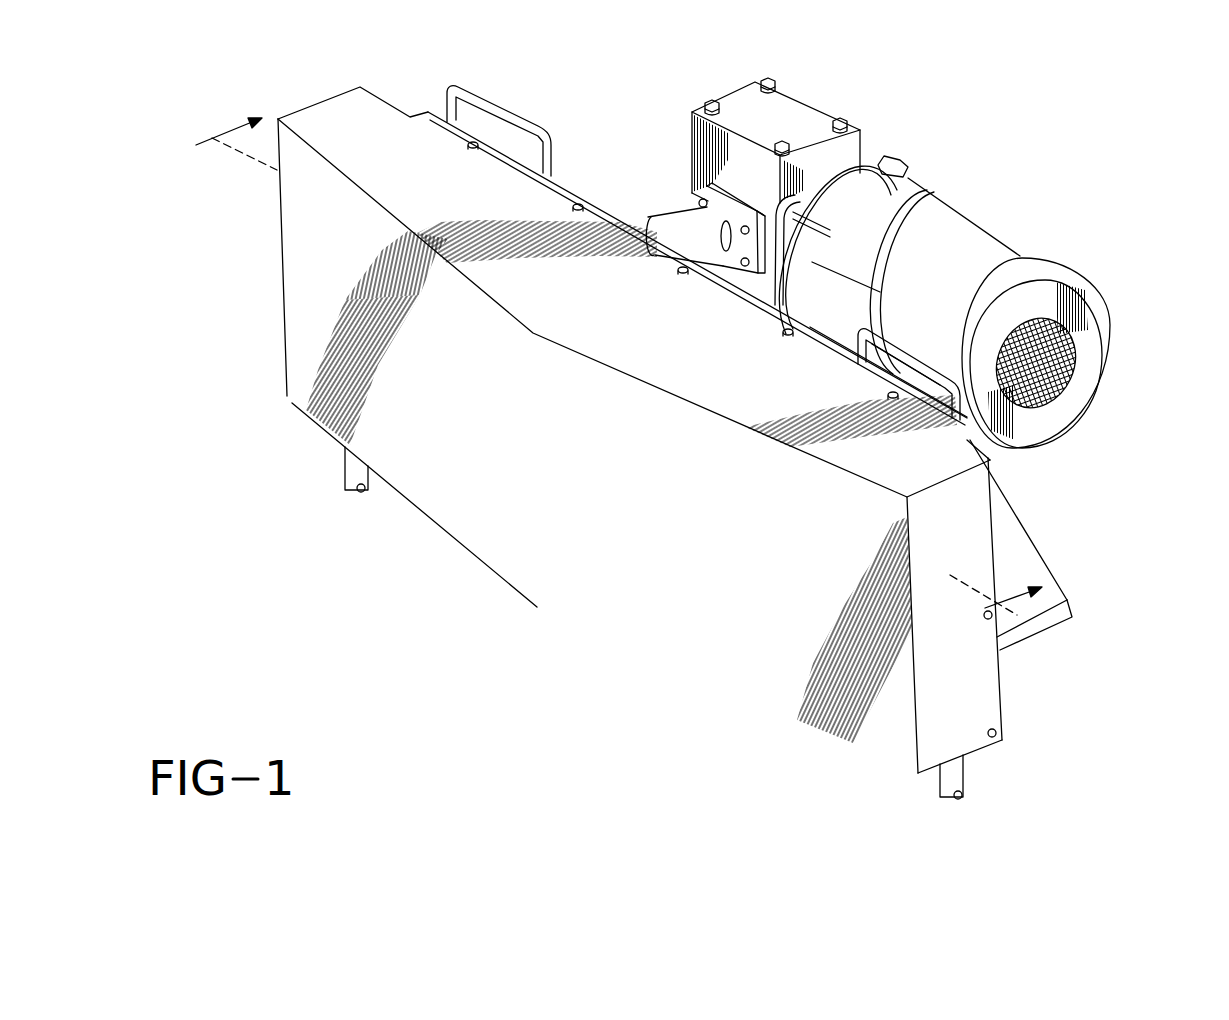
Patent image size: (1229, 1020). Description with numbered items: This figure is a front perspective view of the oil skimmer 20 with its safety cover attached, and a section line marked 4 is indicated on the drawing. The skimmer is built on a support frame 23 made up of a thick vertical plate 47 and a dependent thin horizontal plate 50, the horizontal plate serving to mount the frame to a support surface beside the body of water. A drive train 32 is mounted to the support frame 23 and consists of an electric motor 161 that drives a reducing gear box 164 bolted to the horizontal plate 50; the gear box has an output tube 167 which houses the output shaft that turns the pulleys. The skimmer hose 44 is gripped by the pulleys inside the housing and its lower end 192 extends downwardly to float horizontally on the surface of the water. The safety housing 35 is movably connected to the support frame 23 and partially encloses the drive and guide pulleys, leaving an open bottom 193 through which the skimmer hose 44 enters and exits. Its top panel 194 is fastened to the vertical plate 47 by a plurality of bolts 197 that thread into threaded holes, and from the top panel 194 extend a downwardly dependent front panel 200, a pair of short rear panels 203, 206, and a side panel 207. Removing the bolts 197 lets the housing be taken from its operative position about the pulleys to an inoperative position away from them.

The section line 4- 4 is at (630, 351).
The oil skimmer 20 is at (1127, 127).
The support frame 23 is at (1057, 525).
The drive train 32 is at (988, 138).
The safety housing 35 is at (377, 82).
The skimmer hose 44 is at (975, 783).
The vertical plate 47 is at (566, 177).
The horizontal plate 50 is at (1067, 595).
The electric motor 161 is at (1020, 233).
The reducing gear box 164 is at (825, 110).
The output tube 167 is at (675, 212).
The lower end 192 is at (348, 480).
The open bottom 193 is at (590, 649).
The top panel 194 is at (581, 326).
The bolts 197 is at (468, 145).
The front panel 200 is at (626, 556).
The short rear panel 203 is at (1000, 697).
The short rear panel 206 is at (393, 104).
The side panel 207 is at (933, 713).